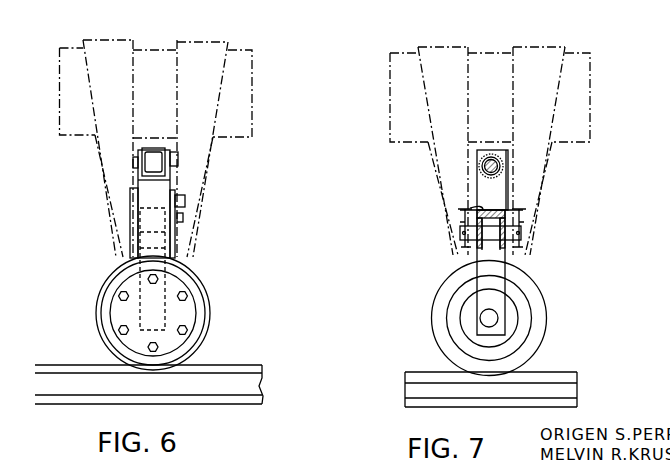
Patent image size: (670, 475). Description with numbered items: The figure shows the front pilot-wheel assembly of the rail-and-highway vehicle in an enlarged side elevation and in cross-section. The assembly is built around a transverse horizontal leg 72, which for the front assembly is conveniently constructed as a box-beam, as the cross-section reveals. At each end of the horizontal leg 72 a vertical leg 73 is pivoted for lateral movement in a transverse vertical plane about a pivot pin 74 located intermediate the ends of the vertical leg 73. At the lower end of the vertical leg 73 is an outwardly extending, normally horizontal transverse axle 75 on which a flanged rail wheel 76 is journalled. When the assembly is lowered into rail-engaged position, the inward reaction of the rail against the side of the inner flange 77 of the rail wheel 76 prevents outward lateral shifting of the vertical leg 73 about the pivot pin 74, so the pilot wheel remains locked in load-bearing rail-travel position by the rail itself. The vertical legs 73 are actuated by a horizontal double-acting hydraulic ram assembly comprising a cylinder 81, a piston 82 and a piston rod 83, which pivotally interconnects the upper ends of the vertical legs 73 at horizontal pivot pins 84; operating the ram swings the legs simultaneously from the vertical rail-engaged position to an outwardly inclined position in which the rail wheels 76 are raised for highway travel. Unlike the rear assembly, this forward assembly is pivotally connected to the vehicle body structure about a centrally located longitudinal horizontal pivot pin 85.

In FIG. 6, the transverse horizontal leg 72 is at (175, 232).
In FIG. 7, the transverse horizontal leg 72 is at (483, 208).
In FIG. 6, the vertical leg 73 is at (172, 188).
In FIG. 7, the vertical leg 73 is at (507, 272).
In FIG. 6, the pivot pin 74 is at (185, 201).
In FIG. 7, the transverse axle 75 is at (498, 318).
In FIG. 6, the flanged rail wheel 76 is at (193, 302).
In FIG. 7, the flanged rail wheel 76 is at (452, 303).
In FIG. 6, the inner flange 77 is at (210, 320).
In FIG. 7, the cylinder 81 is at (503, 173).
In FIG. 7, the piston 82 is at (497, 165).
In FIG. 7, the piston rod 83 is at (500, 169).
In FIG. 6, the horizontal pivot pin 84 is at (178, 159).
In FIG. 7, the longitudinal horizontal pivot pin 85 is at (521, 233).